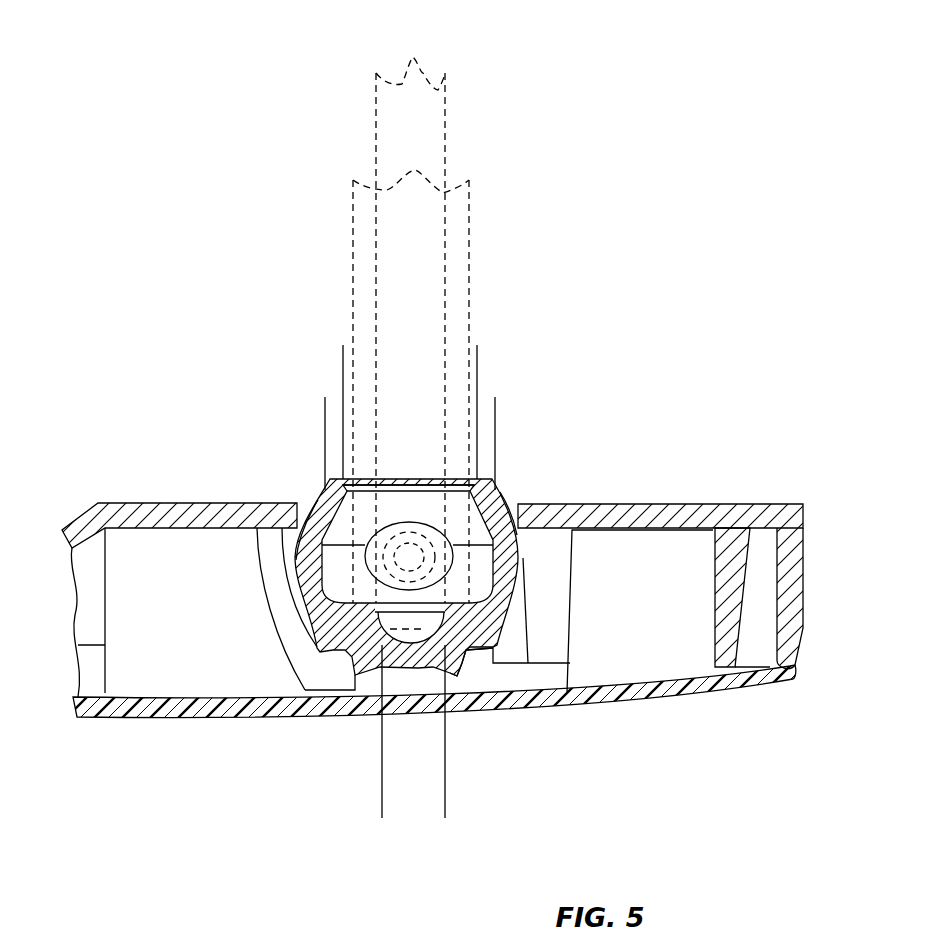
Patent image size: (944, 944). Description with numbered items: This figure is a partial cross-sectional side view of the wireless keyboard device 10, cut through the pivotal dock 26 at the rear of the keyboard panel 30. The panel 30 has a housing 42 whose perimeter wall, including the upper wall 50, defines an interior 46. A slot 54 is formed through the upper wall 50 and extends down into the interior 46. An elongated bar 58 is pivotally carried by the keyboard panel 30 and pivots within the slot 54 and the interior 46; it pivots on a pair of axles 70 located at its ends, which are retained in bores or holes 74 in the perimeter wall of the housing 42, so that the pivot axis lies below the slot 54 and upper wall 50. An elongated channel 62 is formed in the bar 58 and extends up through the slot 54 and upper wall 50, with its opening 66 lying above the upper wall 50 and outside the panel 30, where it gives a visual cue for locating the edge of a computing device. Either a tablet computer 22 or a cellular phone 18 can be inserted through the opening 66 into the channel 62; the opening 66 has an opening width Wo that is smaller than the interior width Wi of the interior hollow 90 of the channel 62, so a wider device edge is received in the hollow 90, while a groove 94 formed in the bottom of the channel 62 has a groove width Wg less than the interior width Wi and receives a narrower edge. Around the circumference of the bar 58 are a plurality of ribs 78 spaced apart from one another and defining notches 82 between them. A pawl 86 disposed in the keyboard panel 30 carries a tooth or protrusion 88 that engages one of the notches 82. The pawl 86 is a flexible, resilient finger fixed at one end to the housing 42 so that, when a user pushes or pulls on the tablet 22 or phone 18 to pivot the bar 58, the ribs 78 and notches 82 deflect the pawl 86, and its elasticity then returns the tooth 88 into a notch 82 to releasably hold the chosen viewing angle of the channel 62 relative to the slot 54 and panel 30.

The wireless keyboard device 10 is at (121, 470).
The cellular phone 18 is at (450, 110).
The tablet computer 22 is at (472, 275).
The pivotal dock 26 is at (526, 460).
The keyboard panel 30 is at (787, 590).
The housing 42 is at (645, 694).
The interior 46 is at (180, 650).
The upper wall 50 is at (665, 511).
The slot 54 is at (517, 498).
The elongated bar 58 is at (313, 517).
The elongated channel 62 is at (408, 490).
The opening 66 is at (399, 508).
The axles 70 is at (447, 557).
The bores or holes 74 is at (457, 583).
The ribs 78 is at (500, 656).
The notches 82 is at (473, 656).
The pawl 86 is at (273, 613).
The tooth or protrusion 88 is at (333, 665).
The interior hollow 90 is at (338, 565).
The groove 94 is at (403, 635).
The opening width Wo is at (517, 360).
The interior width Wi is at (493, 412).
The groove width Wg is at (476, 803).